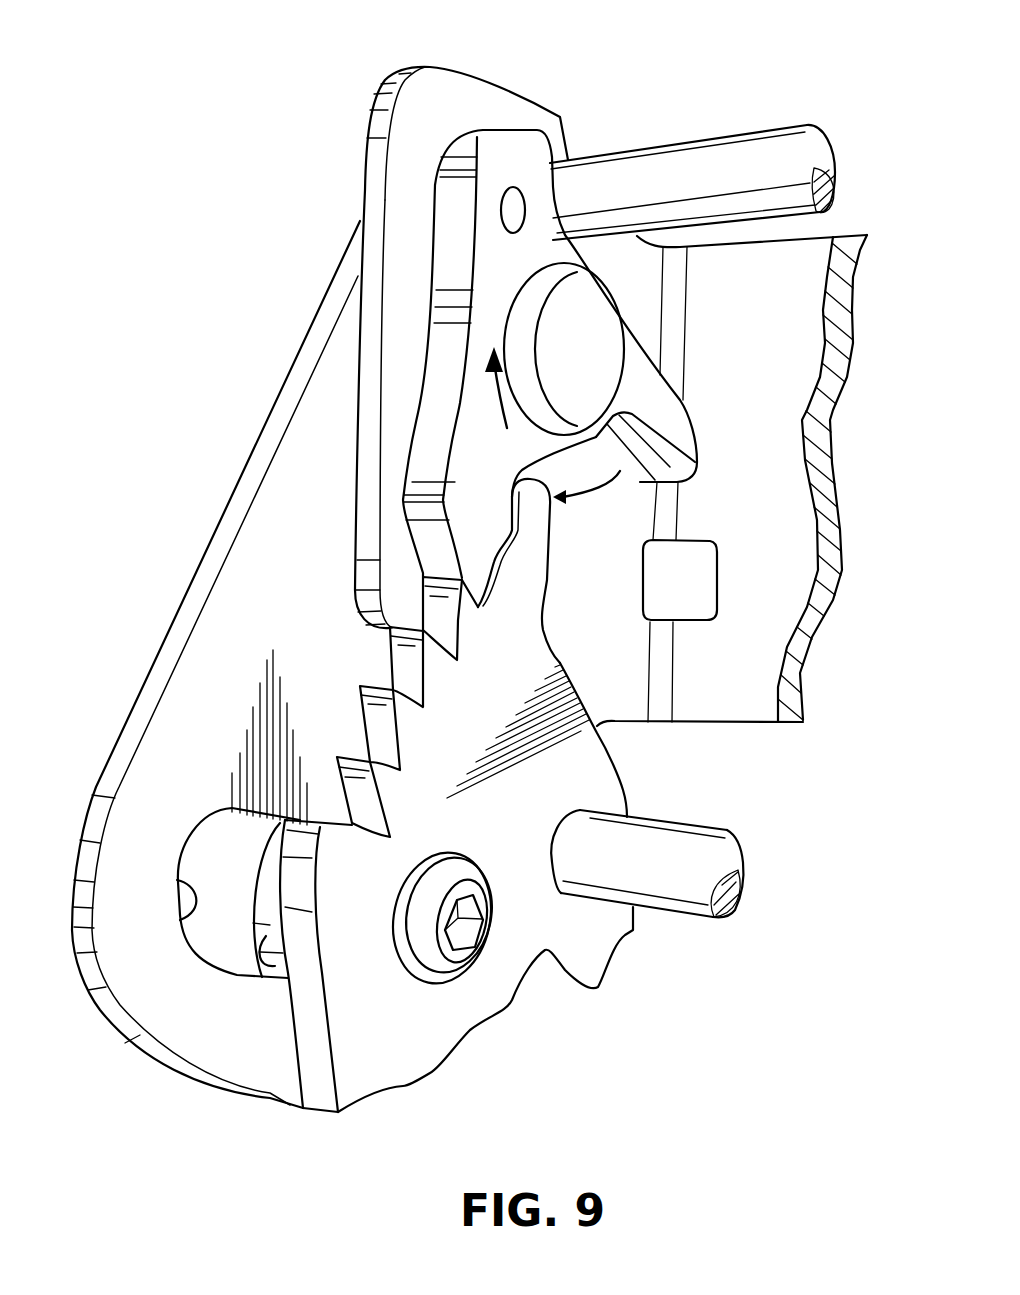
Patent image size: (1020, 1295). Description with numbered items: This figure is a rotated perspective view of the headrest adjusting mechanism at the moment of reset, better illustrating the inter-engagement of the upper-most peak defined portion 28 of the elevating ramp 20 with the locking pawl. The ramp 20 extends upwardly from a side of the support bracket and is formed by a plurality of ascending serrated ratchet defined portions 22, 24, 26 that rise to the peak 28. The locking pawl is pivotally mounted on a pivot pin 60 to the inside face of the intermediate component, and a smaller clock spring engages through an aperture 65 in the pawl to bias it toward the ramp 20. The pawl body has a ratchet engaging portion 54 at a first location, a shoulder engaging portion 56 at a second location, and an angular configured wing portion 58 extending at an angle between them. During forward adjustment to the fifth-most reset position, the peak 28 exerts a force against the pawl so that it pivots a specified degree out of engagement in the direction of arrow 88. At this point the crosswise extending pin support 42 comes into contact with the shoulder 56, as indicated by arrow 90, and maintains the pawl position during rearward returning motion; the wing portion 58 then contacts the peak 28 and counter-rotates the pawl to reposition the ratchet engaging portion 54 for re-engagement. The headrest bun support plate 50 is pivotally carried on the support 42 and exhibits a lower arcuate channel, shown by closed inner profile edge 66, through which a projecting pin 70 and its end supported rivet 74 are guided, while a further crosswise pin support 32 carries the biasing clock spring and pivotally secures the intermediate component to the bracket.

The elevating ramp 20 is at (533, 948).
The ratchet defined portion 22 is at (335, 837).
The ratchet defined portion 24 is at (363, 793).
The ratchet defined portion 26 is at (385, 725).
The upper-most peak defined portion 28 is at (533, 505).
The crosswise extending pin support 32 is at (653, 897).
The crosswise extending pin support 42 is at (737, 162).
The headrest bun support plate 50 is at (207, 650).
The ratchet engaging portion 54 is at (478, 570).
The shoulder engaging portion 56 is at (483, 140).
The angular configured wing portion 58 is at (677, 447).
The pivot pin 60 is at (588, 318).
The aperture 65 is at (510, 190).
The closed inner profile edge 66 is at (190, 895).
The projecting pin 70 is at (437, 967).
The rivet 74 is at (258, 937).
The directional arrow 88 is at (497, 405).
The directional arrow 90 is at (597, 490).